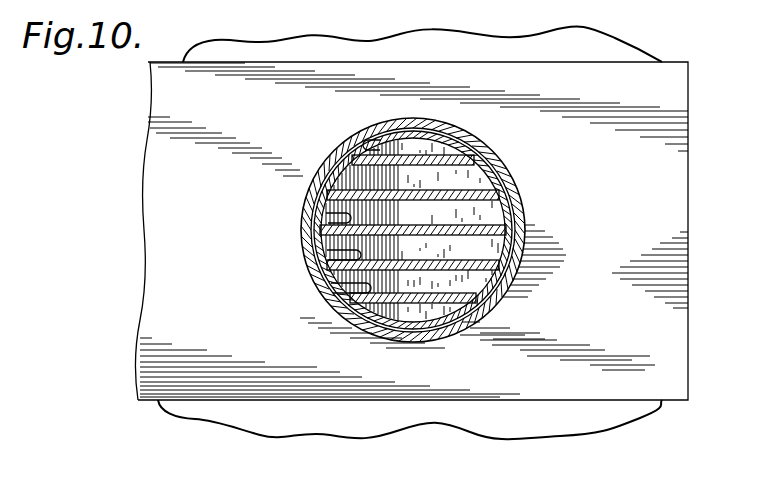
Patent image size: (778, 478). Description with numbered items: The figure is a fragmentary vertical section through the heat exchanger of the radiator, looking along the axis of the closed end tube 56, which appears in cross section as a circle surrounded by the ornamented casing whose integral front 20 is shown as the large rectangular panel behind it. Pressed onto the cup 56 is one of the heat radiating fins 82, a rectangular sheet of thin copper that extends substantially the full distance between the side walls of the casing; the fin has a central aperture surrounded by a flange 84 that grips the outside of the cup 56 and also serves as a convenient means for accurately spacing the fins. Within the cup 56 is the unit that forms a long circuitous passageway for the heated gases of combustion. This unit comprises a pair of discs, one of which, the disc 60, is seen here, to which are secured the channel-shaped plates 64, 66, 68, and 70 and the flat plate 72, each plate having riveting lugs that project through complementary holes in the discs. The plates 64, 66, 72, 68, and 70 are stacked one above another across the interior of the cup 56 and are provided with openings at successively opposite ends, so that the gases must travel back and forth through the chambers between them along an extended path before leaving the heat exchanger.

The front 20 is at (248, 50).
The heat radiating fins 82 is at (306, 74).
The flanges 84 is at (368, 136).
The closed end tube 56 is at (362, 144).
The channel-shaped plate 64 is at (448, 156).
The channel-shaped plate 66 is at (478, 187).
The disc 60 is at (475, 222).
The flat plate 72 is at (330, 221).
The channel-shaped plate 68 is at (330, 258).
The channel-shaped plate 70 is at (338, 291).